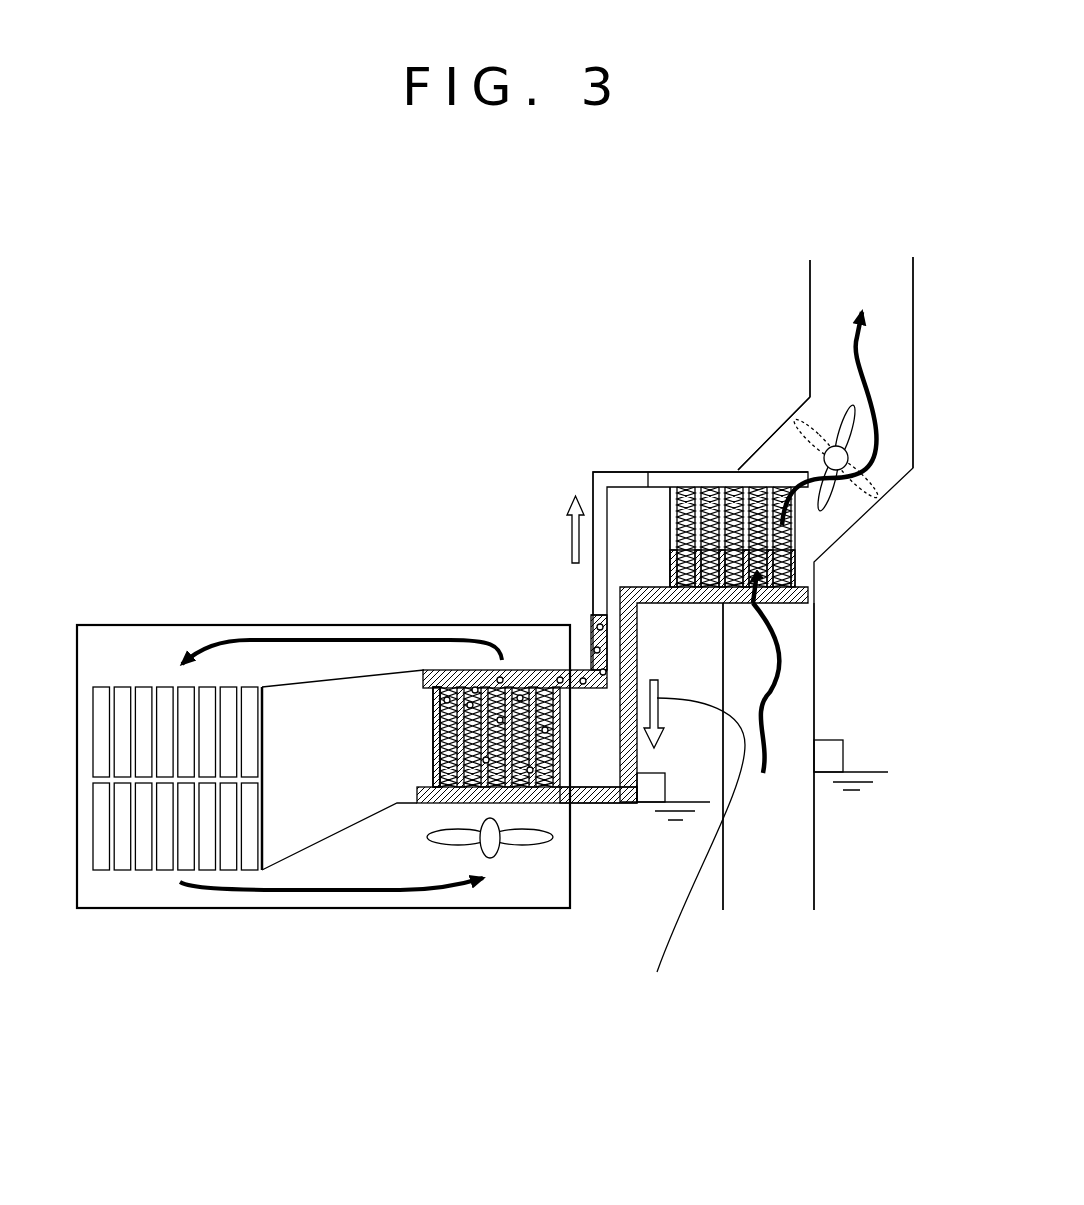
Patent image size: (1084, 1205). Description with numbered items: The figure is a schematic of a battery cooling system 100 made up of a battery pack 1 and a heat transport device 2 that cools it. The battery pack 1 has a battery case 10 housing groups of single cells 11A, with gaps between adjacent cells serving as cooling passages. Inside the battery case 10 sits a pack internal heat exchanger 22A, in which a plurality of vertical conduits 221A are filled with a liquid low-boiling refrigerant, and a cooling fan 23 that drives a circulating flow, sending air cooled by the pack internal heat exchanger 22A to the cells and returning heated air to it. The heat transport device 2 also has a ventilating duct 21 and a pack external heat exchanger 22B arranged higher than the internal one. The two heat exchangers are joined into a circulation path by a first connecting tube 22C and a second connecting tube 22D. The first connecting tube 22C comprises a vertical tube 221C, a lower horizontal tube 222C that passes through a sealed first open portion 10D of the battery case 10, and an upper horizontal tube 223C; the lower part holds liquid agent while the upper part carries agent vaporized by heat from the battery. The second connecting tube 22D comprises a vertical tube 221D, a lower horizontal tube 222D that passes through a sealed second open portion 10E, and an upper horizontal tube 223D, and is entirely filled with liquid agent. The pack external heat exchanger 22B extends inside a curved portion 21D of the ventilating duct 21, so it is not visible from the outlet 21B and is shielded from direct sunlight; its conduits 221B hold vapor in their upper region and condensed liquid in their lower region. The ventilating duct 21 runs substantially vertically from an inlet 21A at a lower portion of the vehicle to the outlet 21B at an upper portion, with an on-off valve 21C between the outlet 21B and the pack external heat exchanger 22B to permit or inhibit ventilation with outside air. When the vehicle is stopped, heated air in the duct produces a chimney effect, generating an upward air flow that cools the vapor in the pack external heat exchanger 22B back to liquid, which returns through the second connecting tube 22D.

The battery cooling system 100 is at (268, 290).
The battery pack 1 is at (118, 607).
The battery case 10 is at (198, 625).
The single cells 11A is at (292, 727).
The pack internal heat exchanger 22A is at (428, 757).
The conduits 221A is at (437, 698).
The vertical tube 221D is at (437, 780).
The cooling fan 23 is at (515, 848).
The first open portion 10D is at (573, 688).
The second open portion 10E is at (570, 804).
The lower horizontal tube 222D is at (607, 800).
The heat transport device 2 is at (633, 386).
The first connecting tube 22C is at (572, 476).
The upper horizontal tube 223C is at (612, 472).
The lower horizontal tube 222C is at (592, 668).
The vertical tube 221C is at (593, 605).
The upper horizontal tube 223D is at (645, 588).
The pack external heat exchanger 22B is at (812, 559).
The conduits 221B is at (670, 520).
The ventilating duct 21 is at (810, 362).
The outlet 21B is at (840, 262).
The curved portion 21D is at (773, 432).
The inlet 21A is at (772, 910).
The on-off valve 21C is at (874, 496).
The second connecting tube 22D is at (692, 754).